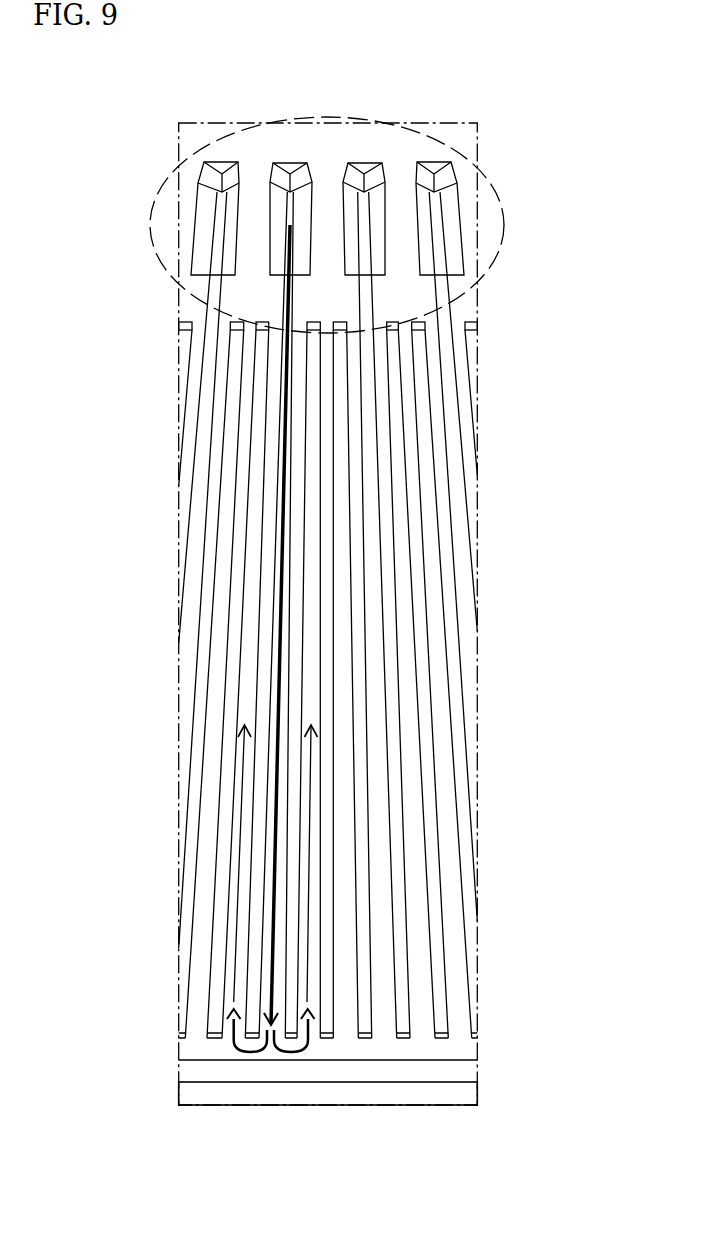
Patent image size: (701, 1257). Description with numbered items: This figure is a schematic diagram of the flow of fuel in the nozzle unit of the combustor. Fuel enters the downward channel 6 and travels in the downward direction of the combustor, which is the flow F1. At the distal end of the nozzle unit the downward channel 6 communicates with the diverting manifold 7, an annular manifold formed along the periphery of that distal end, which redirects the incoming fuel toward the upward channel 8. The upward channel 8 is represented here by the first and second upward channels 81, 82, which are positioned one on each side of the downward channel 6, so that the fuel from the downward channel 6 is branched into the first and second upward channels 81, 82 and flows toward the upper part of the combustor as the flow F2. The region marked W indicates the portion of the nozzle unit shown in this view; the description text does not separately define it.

The downward channel 6 is at (280, 665).
The diverting manifold 7 is at (443, 1048).
The upward channel 8 is at (327, 218).
The first upward channel 81 is at (232, 985).
The second upward channel 82 is at (315, 985).
The downward fuel flow F1 is at (283, 480).
The upward fuel flow F2 is at (242, 795).
The wafer W is at (497, 188).